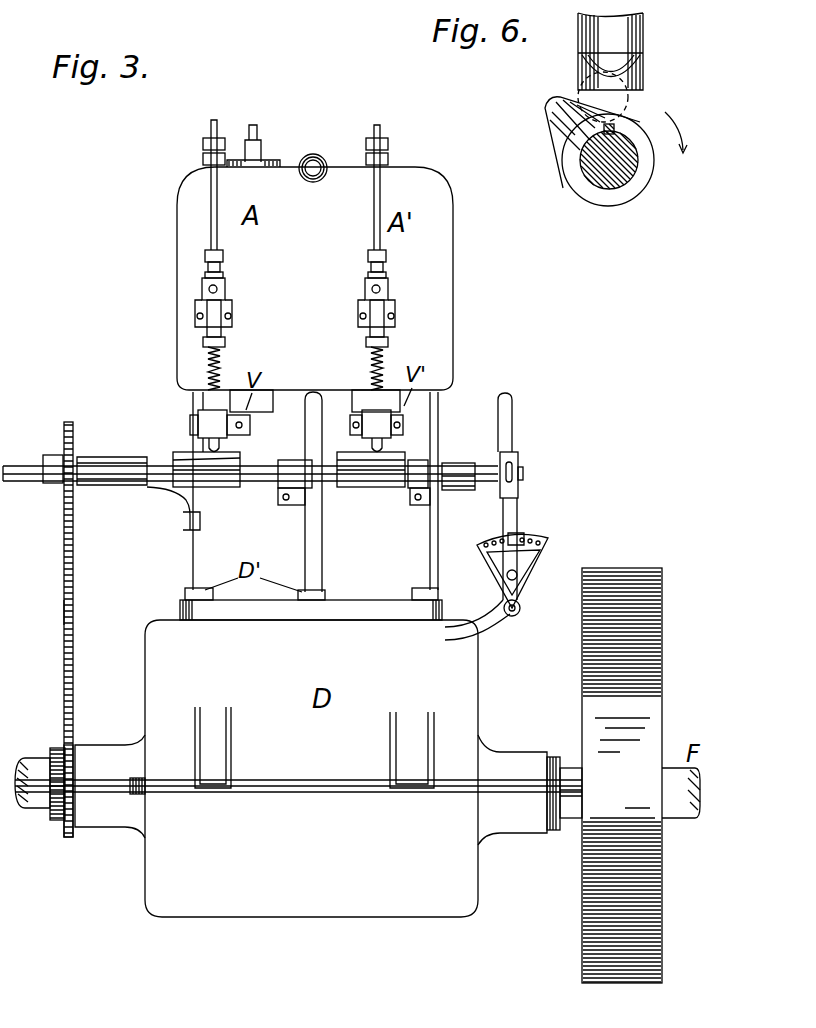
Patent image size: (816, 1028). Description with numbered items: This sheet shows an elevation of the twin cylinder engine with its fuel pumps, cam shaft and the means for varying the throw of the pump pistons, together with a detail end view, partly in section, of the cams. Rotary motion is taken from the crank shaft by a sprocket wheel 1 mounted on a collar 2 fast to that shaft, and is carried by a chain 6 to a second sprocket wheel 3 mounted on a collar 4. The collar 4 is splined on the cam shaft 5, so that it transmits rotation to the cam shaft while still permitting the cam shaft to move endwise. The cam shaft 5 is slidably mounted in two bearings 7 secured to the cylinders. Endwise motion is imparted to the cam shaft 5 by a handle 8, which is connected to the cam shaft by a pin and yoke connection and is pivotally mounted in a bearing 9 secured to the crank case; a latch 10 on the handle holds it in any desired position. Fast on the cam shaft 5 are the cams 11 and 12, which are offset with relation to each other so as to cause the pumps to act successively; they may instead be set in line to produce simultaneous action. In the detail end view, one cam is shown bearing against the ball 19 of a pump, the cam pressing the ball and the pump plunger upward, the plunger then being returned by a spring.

In FIG. 3, the sprocket wheel 1 is at (62, 830).
In FIG. 3, the collar 2 is at (50, 752).
In FIG. 3, the sprocket wheel 3 is at (73, 437).
In FIG. 3, the collar 4 is at (80, 458).
In FIG. 3, the cam shaft 5 is at (252, 470).
In FIG. 6, the cam shaft 5 is at (626, 172).
In FIG. 3, the chain 6 is at (64, 614).
In FIG. 3, the bearings 7 is at (92, 472).
In FIG. 3, the handle 8 is at (515, 425).
In FIG. 3, the bearing 9 is at (520, 608).
In FIG. 3, the latch 10 is at (522, 538).
In FIG. 3, the cam 11 is at (185, 465).
In FIG. 6, the cam 11 is at (548, 118).
In FIG. 3, the cam 12 is at (392, 470).
In FIG. 6, the cam 12 is at (602, 98).
In FIG. 6, the ball 19 is at (608, 68).